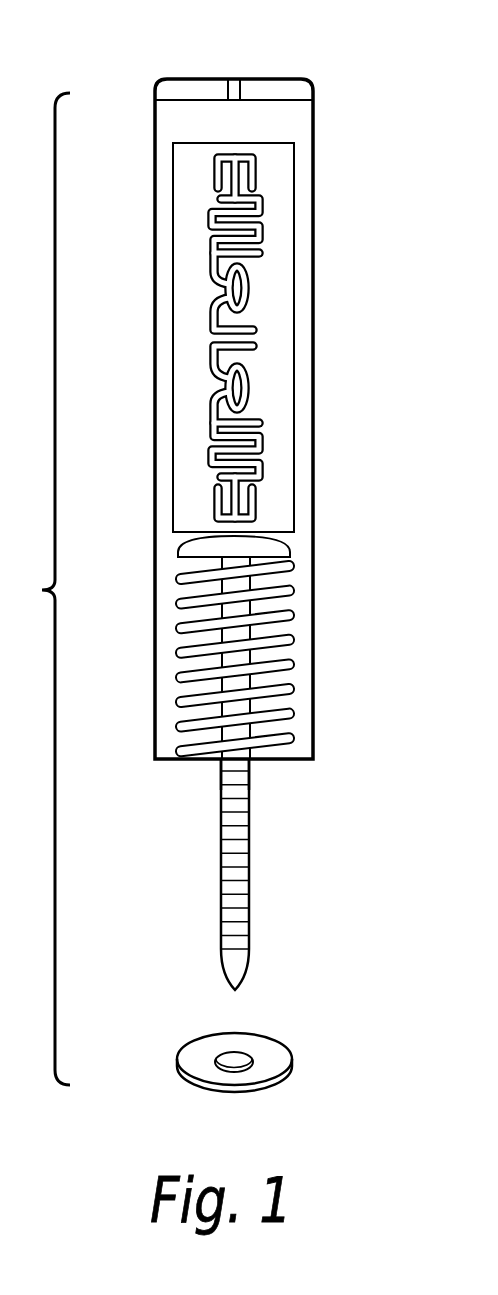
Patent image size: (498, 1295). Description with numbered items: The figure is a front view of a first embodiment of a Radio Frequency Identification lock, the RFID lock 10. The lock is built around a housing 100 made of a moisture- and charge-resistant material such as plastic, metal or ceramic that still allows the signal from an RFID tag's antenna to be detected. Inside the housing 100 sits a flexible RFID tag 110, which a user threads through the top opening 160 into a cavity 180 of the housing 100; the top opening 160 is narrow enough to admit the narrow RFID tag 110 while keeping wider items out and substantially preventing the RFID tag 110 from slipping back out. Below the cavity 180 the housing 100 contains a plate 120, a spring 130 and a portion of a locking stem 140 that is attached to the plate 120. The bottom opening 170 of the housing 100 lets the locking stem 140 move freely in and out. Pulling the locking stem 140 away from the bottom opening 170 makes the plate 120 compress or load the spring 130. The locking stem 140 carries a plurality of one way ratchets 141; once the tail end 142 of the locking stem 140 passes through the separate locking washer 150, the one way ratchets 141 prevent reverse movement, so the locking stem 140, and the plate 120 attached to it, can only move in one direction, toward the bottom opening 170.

The RFID lock 10 is at (36, 589).
The housing 100 is at (359, 372).
The flexible RFID tag 110 is at (285, 193).
The plate 120 is at (285, 543).
The spring 130 is at (288, 630).
The locking stem 140 is at (292, 868).
The one way ratchets 141 is at (238, 860).
The tail end 142 is at (238, 970).
The locking washer 150 is at (225, 1040).
The top opening 160 is at (237, 78).
The bottom opening 170 is at (255, 788).
The cavity 180 is at (302, 241).